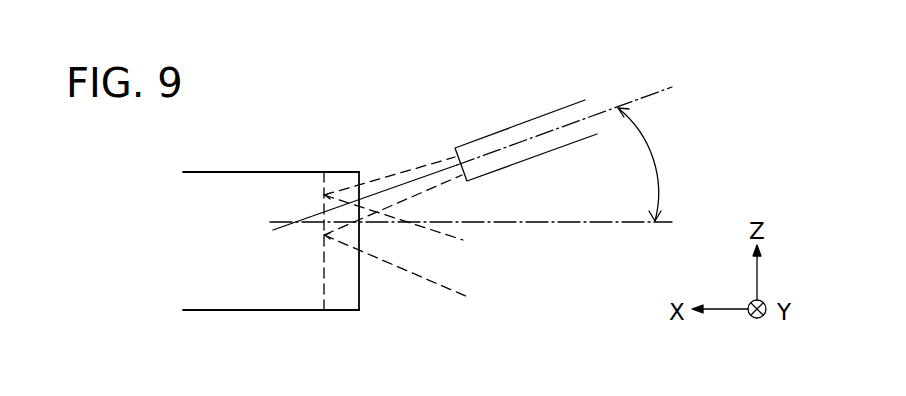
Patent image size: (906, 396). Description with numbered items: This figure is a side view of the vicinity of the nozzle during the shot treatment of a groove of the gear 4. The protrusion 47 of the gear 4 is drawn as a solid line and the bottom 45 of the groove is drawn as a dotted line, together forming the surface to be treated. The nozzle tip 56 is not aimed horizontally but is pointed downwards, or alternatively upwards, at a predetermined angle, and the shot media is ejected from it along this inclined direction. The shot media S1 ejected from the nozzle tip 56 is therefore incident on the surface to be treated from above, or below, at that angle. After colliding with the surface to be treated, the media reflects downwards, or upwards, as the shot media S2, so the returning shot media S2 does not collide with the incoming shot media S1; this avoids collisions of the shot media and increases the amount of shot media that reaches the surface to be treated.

The gear 4 is at (238, 220).
The bottom of the groove 45 is at (323, 255).
The protrusion 47 is at (359, 277).
The nozzle tip 56 is at (503, 145).
The shot media ejected from the nozzle tip S1 is at (412, 170).
The shot media that has collided with the surface to be treated and bounced back S2 is at (417, 272).